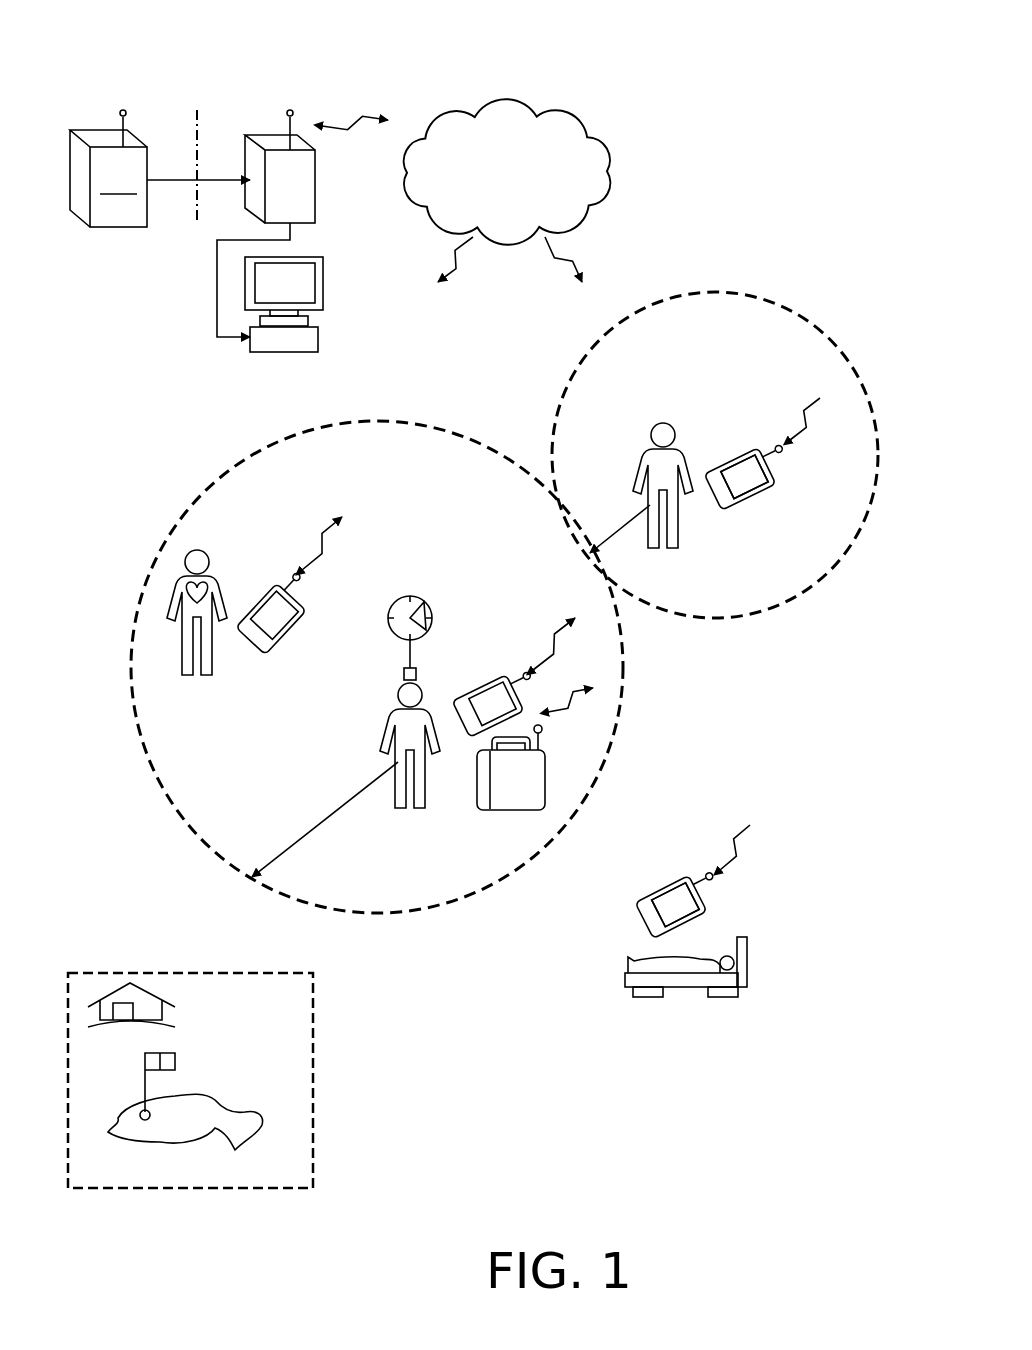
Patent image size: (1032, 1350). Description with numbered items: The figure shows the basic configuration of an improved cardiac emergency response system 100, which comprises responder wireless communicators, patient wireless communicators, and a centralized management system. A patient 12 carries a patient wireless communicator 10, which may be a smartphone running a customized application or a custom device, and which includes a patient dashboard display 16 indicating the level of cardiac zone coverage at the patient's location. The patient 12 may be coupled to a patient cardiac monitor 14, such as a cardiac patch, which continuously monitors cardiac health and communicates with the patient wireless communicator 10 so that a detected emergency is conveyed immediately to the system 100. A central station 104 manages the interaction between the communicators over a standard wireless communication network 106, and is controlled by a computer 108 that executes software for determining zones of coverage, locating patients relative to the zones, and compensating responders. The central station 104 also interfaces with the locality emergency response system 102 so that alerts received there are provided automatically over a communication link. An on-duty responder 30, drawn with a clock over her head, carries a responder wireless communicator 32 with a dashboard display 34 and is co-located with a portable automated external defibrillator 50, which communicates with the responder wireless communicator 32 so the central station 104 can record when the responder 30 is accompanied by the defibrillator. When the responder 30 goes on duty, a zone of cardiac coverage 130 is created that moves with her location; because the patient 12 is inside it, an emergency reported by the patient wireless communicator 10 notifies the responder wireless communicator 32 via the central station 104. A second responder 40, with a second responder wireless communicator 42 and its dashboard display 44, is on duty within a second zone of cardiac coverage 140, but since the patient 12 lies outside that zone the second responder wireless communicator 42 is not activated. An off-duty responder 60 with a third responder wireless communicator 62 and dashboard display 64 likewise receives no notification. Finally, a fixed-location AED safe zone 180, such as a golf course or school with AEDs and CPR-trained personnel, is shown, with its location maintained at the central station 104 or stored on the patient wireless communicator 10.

The cardiac emergency response system 100 is at (807, 64).
The locality emergency response system 102 is at (98, 130).
The central station 104 is at (266, 135).
The wireless communication network 106 is at (489, 184).
The computer 108 is at (320, 340).
The patient wireless communicator 10 is at (250, 650).
The patient 12 is at (177, 645).
The patient cardiac monitor 14 is at (185, 593).
The patient dashboard display 16 is at (295, 630).
The on-duty responder 30 is at (403, 675).
The responder wireless communicator 32 is at (455, 695).
The dashboard display 34 is at (497, 683).
The second responder 40 is at (683, 512).
The second responder wireless communicator 42 is at (735, 460).
The dashboard display 44 is at (745, 490).
The portable automated external defibrillator 50 is at (510, 812).
The off-duty responder 60 is at (705, 956).
The third responder wireless communicator 62 is at (650, 895).
The dashboard display 64 is at (670, 885).
The zone of cardiac coverage 130 is at (625, 698).
The second zone of cardiac coverage 140 is at (740, 620).
The AED safe zone 180 is at (313, 1072).